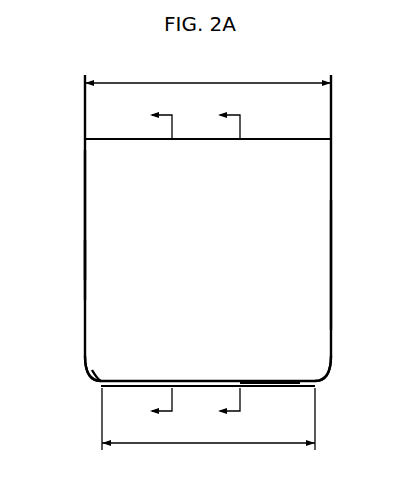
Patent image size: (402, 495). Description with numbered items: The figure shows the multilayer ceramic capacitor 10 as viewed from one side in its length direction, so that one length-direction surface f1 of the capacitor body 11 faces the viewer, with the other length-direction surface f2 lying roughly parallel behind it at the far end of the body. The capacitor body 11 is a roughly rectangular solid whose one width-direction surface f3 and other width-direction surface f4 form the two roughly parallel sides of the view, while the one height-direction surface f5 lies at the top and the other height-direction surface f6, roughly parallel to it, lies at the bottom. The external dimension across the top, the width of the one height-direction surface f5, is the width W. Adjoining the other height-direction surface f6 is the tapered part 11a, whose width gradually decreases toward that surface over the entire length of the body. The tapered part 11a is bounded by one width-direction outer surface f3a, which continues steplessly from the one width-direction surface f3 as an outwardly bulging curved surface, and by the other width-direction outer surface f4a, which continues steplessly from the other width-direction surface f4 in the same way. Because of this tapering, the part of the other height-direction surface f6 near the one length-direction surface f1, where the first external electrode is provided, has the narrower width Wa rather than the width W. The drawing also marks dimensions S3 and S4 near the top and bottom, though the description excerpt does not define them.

The multilayer ceramic capacitor 10 is at (82, 163).
The capacitor body 11 is at (85, 222).
The tapered part 11a is at (92, 366).
The one length-direction surface f1 is at (127, 294).
The other length-direction surface f2 is at (200, 389).
The one width-direction surface f3 is at (331, 262).
The one width-direction outer surface f3a is at (322, 372).
The other width-direction surface f4 is at (85, 260).
The other width-direction outer surface f4a is at (96, 376).
The one height-direction surface f5 is at (200, 138).
The other height-direction surface f6 is at (258, 389).
The distance S3 is at (230, 265).
The distance S4 is at (162, 265).
The width W is at (208, 76).
The width of the electrode-bearing part Wa is at (208, 426).